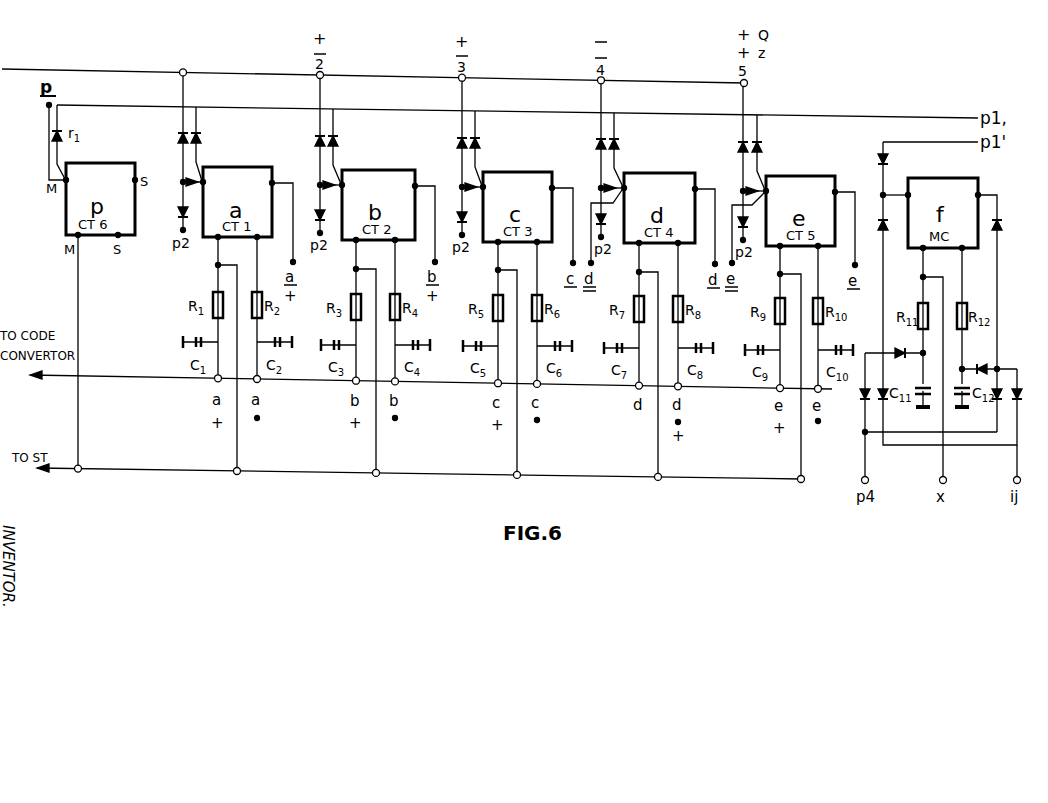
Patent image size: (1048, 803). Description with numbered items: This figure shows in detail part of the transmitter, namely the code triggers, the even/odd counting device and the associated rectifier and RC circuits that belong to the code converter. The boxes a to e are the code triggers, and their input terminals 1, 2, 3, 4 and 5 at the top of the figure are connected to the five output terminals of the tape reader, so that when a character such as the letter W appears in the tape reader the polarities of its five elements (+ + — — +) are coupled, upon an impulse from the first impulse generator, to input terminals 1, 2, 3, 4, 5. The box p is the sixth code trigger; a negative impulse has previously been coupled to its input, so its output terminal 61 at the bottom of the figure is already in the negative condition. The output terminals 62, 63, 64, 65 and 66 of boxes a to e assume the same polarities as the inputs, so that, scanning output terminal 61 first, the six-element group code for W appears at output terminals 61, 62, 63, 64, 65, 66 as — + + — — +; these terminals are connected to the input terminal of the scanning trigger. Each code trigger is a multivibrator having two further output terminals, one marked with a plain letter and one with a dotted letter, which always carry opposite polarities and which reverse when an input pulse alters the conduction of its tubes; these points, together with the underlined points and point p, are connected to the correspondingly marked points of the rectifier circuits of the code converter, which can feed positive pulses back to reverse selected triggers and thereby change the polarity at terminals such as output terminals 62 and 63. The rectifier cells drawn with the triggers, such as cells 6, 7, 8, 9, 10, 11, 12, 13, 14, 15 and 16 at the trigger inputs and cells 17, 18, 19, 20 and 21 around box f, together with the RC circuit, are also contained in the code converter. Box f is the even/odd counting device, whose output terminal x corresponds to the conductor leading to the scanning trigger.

The input terminal 1 is at (182, 45).
The input terminal 2 is at (176, 138).
The input terminal 3 is at (177, 213).
The input terminal 4 is at (201, 138).
The input terminal 5 is at (313, 141).
The diode 6 is at (314, 216).
The diode 7 is at (338, 141).
The diode 8 is at (455, 143).
The diode 9 is at (456, 218).
The diode 10 is at (485, 143).
The diode 11 is at (591, 144).
The diode 12 is at (610, 222).
The diode 13 is at (624, 144).
The diode 14 is at (733, 147).
The conductor 15 is at (752, 225).
The diode 16 is at (767, 147).
The diode 17 is at (893, 161).
The diode 18 is at (872, 225).
The diode 19 is at (1006, 225).
The diode 20 is at (904, 361).
The diode 21 is at (976, 362).
The output terminal 61 is at (92, 522).
The output terminal 62 is at (232, 499).
The output terminal 63 is at (380, 523).
The output terminal 64 is at (524, 518).
The output terminal 65 is at (664, 512).
The output terminal 66 is at (797, 508).